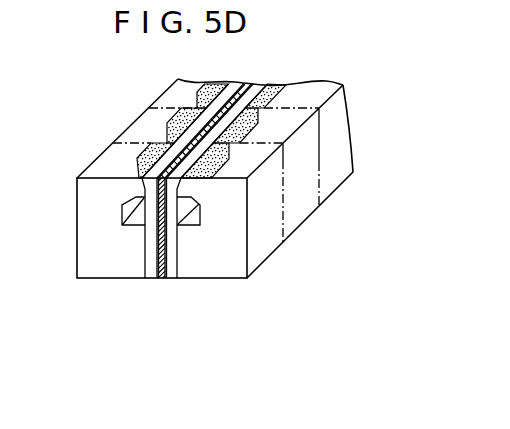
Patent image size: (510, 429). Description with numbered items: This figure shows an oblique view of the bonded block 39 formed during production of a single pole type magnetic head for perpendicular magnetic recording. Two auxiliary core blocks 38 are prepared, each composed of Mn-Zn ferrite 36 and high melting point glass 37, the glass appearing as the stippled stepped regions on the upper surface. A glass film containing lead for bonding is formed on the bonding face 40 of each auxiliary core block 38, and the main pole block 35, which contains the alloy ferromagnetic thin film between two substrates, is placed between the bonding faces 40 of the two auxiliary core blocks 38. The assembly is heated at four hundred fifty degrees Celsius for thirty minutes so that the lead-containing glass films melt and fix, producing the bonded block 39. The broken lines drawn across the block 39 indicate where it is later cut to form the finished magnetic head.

The main pole block 35 is at (157, 280).
The Mn-Zn ferrite 36 is at (98, 273).
The high melting point glass 37 is at (139, 167).
The auxiliary core block 38 is at (77, 228).
The bonded block 39 is at (318, 84).
The bonding face 40 is at (136, 278).